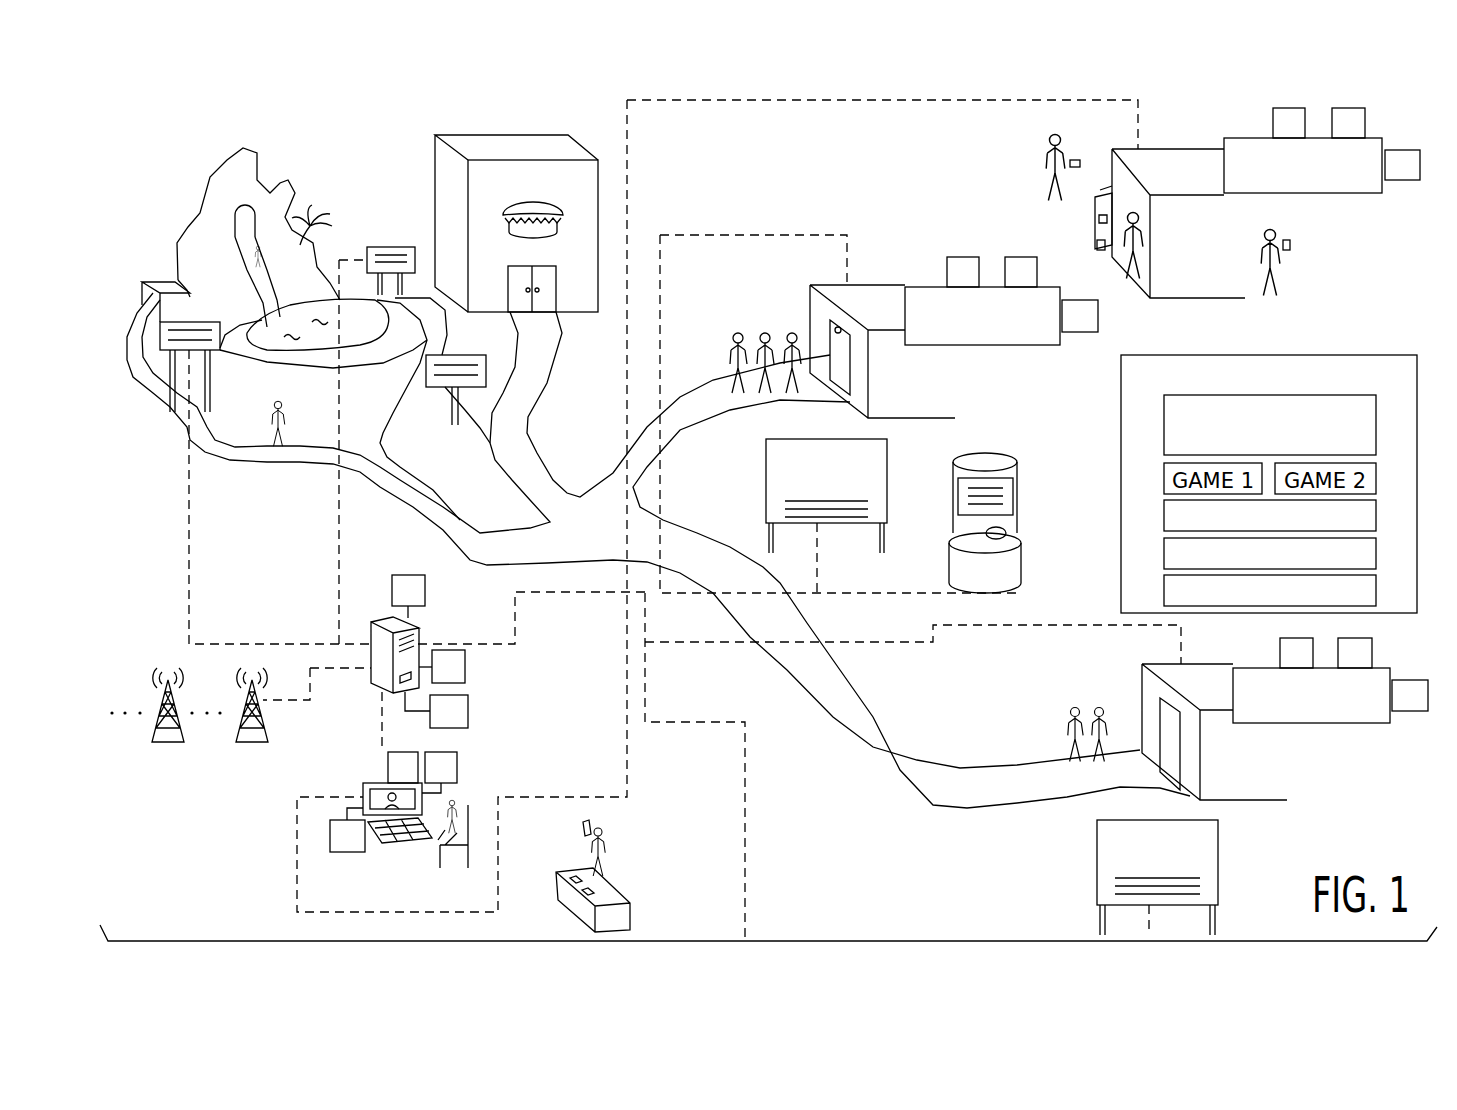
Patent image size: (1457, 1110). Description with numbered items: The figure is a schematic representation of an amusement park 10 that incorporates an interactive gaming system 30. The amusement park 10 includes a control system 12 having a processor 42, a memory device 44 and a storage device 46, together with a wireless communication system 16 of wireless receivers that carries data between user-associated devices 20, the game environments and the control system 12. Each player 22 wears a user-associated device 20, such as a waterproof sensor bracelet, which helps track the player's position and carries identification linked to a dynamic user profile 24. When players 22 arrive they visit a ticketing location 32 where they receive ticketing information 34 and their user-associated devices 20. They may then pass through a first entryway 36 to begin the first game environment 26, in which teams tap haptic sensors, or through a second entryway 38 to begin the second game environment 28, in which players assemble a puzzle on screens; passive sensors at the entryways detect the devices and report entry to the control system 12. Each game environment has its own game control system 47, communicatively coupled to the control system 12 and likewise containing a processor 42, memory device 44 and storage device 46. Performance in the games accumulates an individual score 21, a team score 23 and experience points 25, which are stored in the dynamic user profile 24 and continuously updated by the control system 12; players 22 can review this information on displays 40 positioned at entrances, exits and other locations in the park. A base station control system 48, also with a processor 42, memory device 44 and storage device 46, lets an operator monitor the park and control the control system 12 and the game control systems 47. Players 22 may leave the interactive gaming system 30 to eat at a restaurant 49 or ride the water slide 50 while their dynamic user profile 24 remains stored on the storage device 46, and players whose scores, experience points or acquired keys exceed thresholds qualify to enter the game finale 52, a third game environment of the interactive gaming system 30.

The amusement park 10 is at (404, 106).
The control system 12 is at (375, 600).
The wireless communication system 16 is at (192, 775).
The user-associated device 20 is at (1098, 248).
The individual score 21 is at (1164, 515).
The player 22 is at (262, 185).
The team score 23 is at (1164, 553).
The dynamic user profile 24 is at (1305, 355).
The experience points 25 is at (1164, 590).
The first game environment 26 is at (1180, 297).
The second game environment 28 is at (830, 285).
The interactive gaming system 30 is at (832, 418).
The ticketing location 32 is at (1100, 192).
The ticketing information 34 is at (1070, 190).
The first entryway 36 is at (1103, 192).
The second entryway 38 is at (848, 324).
The display 40 is at (390, 247).
The processor 42 is at (947, 272).
The memory device 44 is at (1037, 272).
The storage device 46 is at (1098, 325).
The game control system 47 is at (1005, 345).
The base station control system 48 is at (356, 766).
The restaurant 49 is at (510, 135).
The water slide 50 is at (188, 228).
The game finale 52 is at (1150, 664).